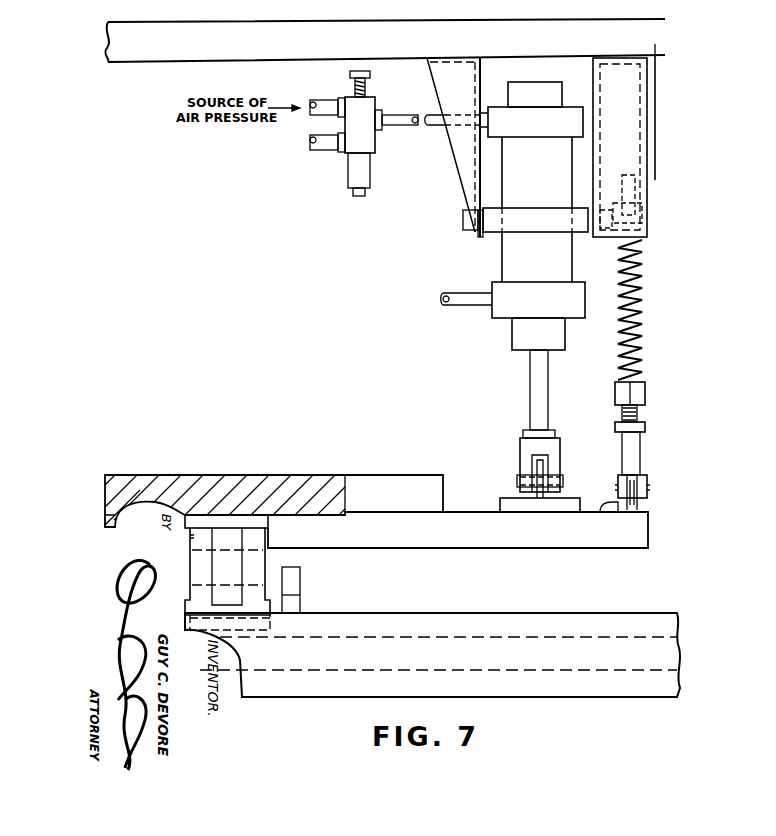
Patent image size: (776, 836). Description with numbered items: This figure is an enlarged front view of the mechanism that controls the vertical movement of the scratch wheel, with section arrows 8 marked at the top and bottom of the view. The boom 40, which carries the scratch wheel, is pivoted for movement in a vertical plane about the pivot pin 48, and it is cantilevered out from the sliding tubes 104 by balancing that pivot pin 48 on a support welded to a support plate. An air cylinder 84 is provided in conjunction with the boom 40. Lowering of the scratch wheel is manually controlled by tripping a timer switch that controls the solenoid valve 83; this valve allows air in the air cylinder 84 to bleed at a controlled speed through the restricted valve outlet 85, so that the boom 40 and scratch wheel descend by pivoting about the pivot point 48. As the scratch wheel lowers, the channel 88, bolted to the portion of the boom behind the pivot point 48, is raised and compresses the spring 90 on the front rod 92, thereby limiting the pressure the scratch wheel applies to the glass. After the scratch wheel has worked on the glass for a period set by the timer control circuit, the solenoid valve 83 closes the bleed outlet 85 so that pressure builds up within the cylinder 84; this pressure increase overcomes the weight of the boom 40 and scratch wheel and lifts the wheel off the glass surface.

The section line 8- 8 is at (664, 20).
The boom 40 is at (186, 482).
The pivot pin 48 is at (233, 570).
The solenoid valve 83 is at (376, 140).
The air cylinder 84 is at (505, 263).
The restricted valve outlet 85 is at (327, 149).
The channel 88 is at (474, 512).
The spring 90 is at (640, 337).
The front rod 92 is at (636, 281).
The spaced tubes 104 is at (574, 613).